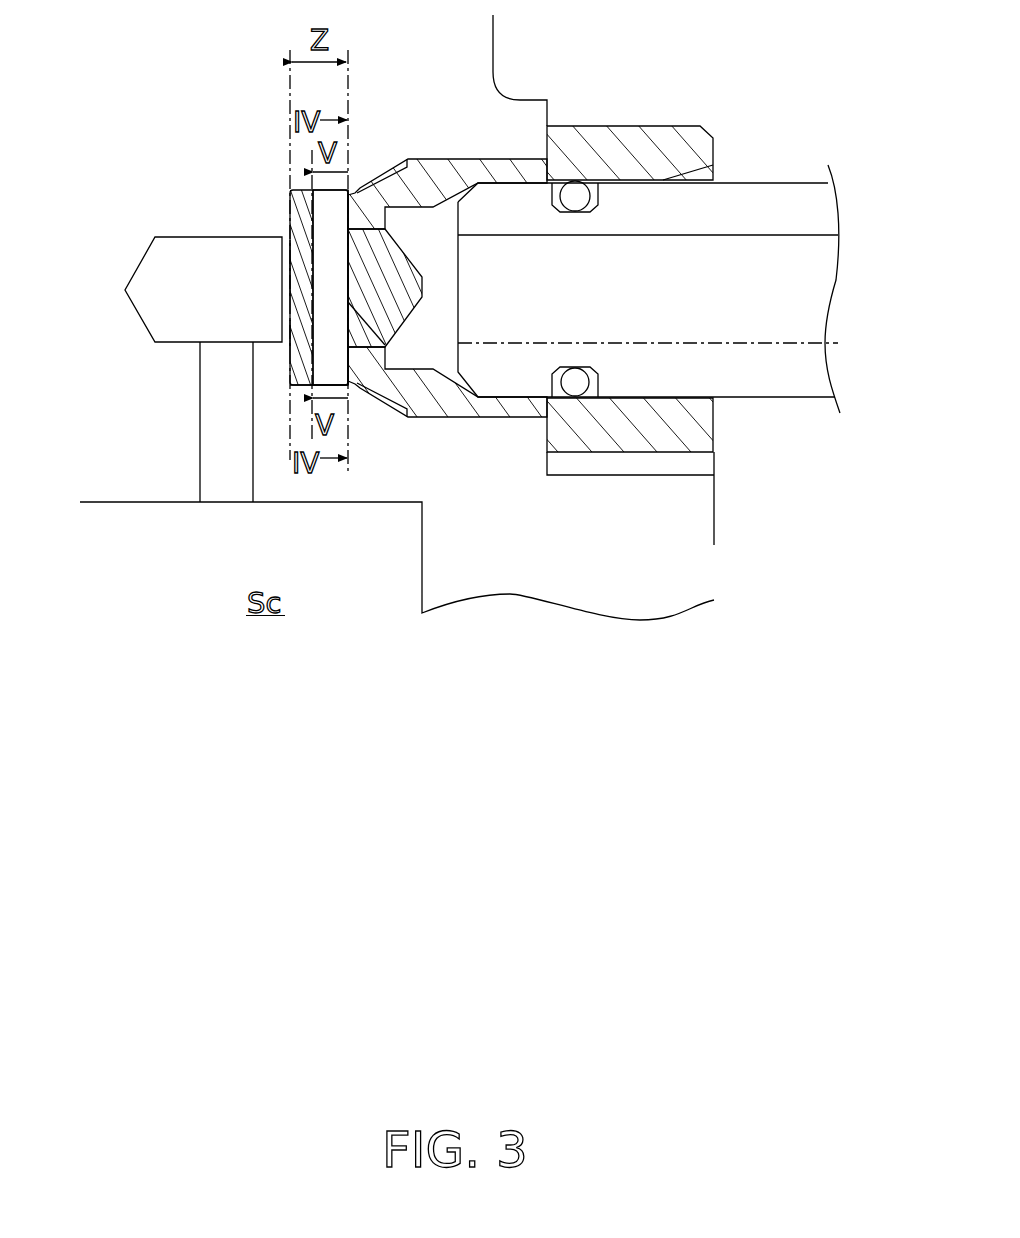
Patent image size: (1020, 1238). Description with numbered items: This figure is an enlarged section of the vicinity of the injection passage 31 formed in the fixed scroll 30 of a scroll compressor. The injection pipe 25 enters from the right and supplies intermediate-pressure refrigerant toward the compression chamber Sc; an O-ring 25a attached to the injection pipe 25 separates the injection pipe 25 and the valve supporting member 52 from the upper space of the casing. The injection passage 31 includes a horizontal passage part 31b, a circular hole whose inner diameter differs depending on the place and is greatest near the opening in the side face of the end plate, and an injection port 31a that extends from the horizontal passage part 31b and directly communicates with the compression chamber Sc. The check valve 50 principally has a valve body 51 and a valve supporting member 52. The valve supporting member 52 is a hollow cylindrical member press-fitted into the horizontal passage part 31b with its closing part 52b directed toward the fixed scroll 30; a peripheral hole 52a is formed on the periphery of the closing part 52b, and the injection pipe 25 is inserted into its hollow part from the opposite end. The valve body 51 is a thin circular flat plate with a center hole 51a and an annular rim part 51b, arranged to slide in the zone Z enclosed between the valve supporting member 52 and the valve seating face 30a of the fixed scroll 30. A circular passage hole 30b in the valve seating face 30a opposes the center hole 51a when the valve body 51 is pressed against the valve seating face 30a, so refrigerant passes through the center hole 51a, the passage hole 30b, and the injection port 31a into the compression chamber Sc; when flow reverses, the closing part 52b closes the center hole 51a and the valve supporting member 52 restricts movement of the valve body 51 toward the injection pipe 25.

The injection pipe 25 is at (668, 240).
The O-ring 25a is at (578, 188).
The fixed scroll 30 is at (512, 65).
The valve seating face 30a is at (298, 378).
The passage hole 30b is at (287, 197).
The injection passage 31 is at (178, 346).
The injection port 31a is at (193, 458).
The horizontal passage part 31b is at (170, 227).
The check valve 50 is at (367, 158).
The valve body 51 is at (283, 235).
The center hole 51a is at (300, 317).
The rim part 51b is at (292, 347).
The valve supporting member 52 is at (526, 308).
The peripheral hole 52a is at (385, 227).
The closing part 52b is at (347, 292).